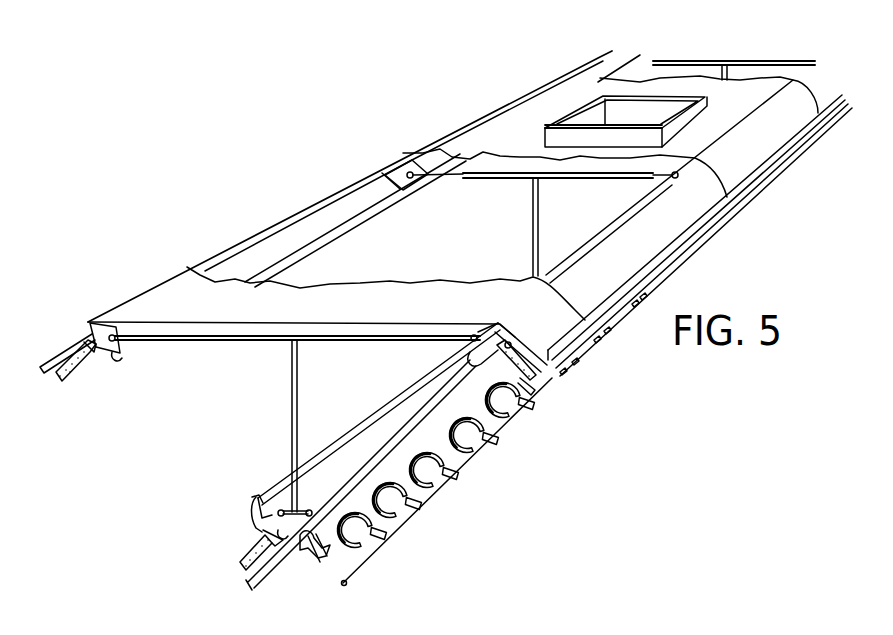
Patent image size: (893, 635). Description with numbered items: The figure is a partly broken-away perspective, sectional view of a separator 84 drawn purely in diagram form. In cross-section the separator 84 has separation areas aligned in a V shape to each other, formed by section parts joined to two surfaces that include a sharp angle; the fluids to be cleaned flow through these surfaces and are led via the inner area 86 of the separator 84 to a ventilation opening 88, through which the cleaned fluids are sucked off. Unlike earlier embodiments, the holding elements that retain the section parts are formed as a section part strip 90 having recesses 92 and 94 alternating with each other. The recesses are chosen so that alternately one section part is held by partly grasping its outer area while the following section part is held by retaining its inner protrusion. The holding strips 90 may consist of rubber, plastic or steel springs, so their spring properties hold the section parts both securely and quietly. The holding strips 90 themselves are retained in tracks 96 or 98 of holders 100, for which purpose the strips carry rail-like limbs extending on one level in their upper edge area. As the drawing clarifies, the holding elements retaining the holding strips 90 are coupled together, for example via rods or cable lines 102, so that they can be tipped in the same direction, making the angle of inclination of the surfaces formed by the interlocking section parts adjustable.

The separator 84 is at (277, 195).
The inner area 86 is at (461, 246).
The ventilation opening 88 is at (628, 124).
The section part strip 90 is at (68, 374).
The recess 92 is at (390, 505).
The recess 94 is at (456, 457).
The track 96 is at (352, 548).
The track 98 is at (256, 503).
The holder 100 is at (342, 425).
The rods or cable lines 102 is at (292, 430).